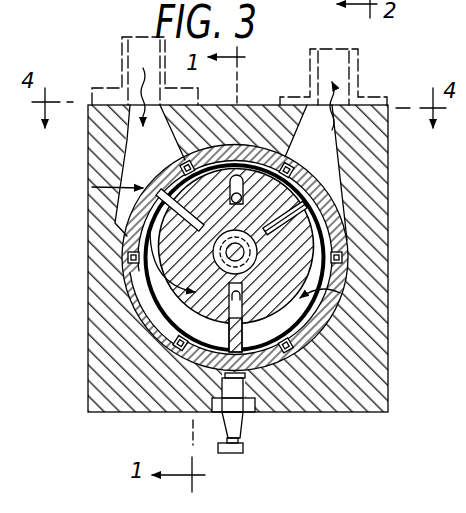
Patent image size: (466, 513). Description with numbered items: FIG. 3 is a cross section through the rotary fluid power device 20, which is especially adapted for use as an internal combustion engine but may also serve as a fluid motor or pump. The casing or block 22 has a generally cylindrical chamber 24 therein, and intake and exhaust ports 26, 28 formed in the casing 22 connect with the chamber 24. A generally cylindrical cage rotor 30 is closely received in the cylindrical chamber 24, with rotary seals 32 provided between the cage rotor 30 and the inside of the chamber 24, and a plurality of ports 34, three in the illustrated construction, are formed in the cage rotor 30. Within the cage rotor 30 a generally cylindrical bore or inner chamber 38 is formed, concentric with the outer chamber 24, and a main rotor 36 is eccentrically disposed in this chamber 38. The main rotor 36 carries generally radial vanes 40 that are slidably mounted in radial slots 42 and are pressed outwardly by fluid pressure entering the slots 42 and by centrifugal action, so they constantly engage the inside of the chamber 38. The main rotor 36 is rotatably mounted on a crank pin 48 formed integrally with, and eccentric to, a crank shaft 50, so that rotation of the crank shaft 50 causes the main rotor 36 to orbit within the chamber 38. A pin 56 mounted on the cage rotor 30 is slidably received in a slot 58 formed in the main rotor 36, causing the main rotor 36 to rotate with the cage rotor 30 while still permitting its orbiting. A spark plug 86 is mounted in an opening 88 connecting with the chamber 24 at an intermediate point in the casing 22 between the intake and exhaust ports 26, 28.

The rotary fluid power device 20 is at (65, 430).
The casing 22 is at (92, 380).
The cylindrical chamber 24 is at (133, 286).
The intake port 26 is at (130, 175).
The exhaust port 28 is at (348, 128).
The cage rotor 30 is at (120, 203).
The rotary seals 32 is at (137, 258).
The ports 34 is at (150, 312).
The main rotor 36 is at (340, 300).
The inner chamber 38 is at (328, 290).
The vanes 40 is at (127, 240).
The radial slots 42 is at (340, 236).
The crank pin 48 is at (258, 256).
The crank shaft 50 is at (245, 298).
The pin 56 is at (200, 192).
The slot 58 is at (237, 175).
The spark plug 86 is at (245, 427).
The opening 88 is at (228, 413).